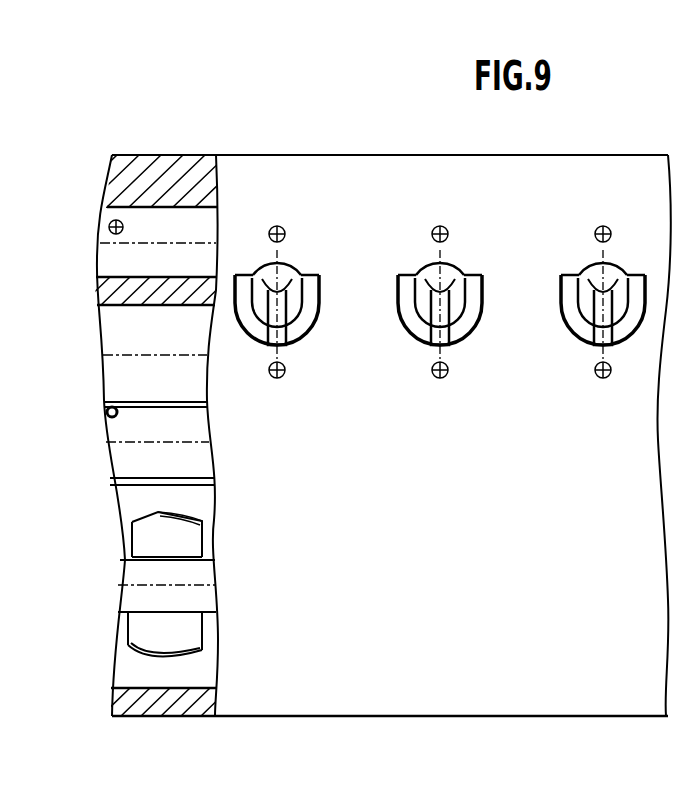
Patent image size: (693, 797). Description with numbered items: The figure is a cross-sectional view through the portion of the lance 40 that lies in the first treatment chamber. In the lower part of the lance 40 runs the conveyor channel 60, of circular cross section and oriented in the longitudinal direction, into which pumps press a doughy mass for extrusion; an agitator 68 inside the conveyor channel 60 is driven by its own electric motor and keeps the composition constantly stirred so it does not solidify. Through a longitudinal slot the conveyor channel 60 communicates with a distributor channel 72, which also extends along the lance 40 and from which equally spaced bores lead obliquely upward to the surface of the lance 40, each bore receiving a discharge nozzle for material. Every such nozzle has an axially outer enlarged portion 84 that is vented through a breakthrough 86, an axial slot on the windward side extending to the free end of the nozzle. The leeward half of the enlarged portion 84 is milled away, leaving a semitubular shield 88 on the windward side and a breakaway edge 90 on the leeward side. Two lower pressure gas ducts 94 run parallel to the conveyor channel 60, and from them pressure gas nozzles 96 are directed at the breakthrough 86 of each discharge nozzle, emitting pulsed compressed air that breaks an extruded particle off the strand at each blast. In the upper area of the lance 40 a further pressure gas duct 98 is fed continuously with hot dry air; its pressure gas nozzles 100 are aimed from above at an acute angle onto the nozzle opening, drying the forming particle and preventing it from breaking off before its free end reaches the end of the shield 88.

The lance 40 is at (303, 724).
The conveyor channel 60 is at (122, 668).
The agitator 68 is at (102, 594).
The distributor channel 72 is at (108, 337).
The enlarged portion 84 is at (615, 262).
The breakthrough 86 is at (412, 345).
The semitubular shield 88 is at (400, 320).
The breakaway edge 90 is at (416, 268).
The lower pressure gas duct 94 is at (112, 469).
The pressure gas nozzle 96 is at (108, 412).
The upper pressure gas duct 98 is at (96, 262).
The pressure gas nozzle 100 is at (108, 222).